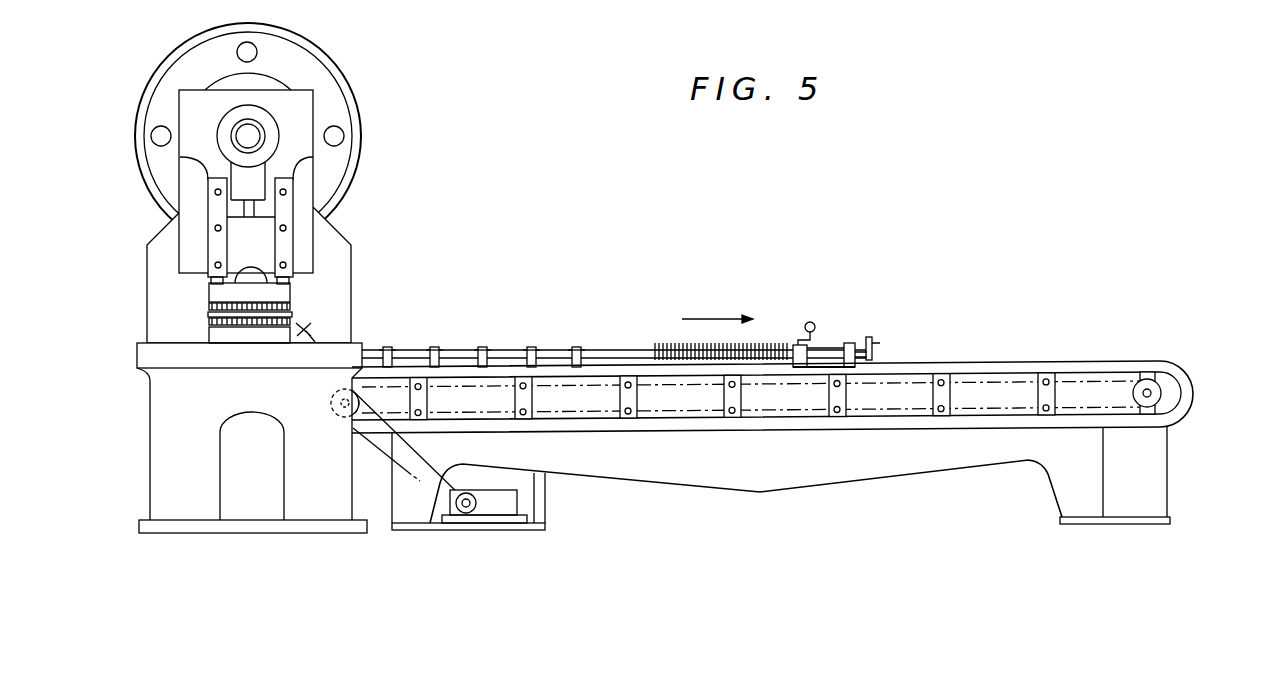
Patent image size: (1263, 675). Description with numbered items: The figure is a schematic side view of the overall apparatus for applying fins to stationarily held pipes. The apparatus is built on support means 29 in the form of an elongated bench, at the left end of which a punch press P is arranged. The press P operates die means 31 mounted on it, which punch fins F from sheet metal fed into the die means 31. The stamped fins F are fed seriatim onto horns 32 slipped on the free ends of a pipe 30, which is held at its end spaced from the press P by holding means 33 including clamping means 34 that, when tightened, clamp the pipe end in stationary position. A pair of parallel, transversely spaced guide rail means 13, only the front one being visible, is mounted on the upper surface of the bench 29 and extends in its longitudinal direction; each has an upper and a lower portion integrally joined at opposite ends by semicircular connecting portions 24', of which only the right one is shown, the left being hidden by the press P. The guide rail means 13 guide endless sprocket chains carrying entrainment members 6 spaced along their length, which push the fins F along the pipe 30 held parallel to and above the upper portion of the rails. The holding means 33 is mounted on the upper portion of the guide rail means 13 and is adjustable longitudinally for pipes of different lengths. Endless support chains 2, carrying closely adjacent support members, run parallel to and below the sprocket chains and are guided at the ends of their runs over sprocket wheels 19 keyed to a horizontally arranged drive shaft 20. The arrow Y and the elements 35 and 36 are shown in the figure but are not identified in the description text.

The punch press P is at (328, 240).
The die means 31 is at (215, 334).
The horns 32 is at (311, 330).
The fins F is at (303, 328).
The entrainment members 6 is at (572, 347).
The pipe 30 is at (612, 353).
The holding means 33 is at (849, 343).
The clamping means 34 is at (815, 321).
The direction of conveyor travel Y is at (717, 303).
The endless support chains 2 is at (975, 378).
The semicircular connecting portions 24' is at (1194, 376).
The guide rail means 13 is at (1078, 362).
The support means 29 is at (905, 477).
The sprocket wheels 19 is at (332, 394).
The drive shaft 20 is at (335, 418).
The drive belt 35 is at (430, 480).
The motor 36 is at (500, 505).